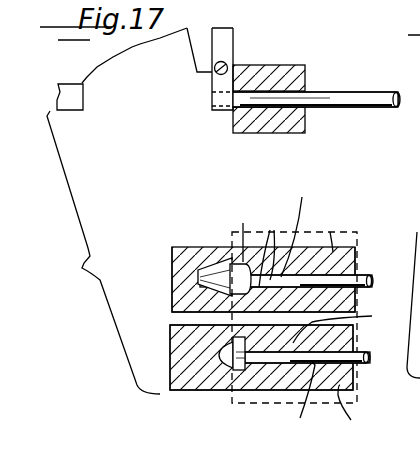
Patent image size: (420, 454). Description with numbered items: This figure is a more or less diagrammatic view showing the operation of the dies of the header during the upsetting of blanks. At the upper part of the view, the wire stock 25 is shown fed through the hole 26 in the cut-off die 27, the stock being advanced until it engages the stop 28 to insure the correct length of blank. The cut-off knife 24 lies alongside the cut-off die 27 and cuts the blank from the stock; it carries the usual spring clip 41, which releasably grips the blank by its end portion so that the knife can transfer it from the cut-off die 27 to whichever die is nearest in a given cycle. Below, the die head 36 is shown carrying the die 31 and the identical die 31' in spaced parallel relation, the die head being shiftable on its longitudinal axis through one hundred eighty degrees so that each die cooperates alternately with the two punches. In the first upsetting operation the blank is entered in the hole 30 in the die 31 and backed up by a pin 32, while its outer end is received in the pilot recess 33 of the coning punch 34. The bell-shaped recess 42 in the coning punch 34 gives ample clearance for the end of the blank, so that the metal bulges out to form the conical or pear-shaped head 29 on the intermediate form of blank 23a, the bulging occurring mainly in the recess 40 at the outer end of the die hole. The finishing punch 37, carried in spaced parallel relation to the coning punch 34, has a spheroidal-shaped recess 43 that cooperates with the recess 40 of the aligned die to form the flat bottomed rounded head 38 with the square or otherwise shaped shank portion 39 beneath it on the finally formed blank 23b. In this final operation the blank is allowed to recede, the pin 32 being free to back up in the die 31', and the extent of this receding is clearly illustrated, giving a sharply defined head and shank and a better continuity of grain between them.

The intermediate form of blank 23a is at (302, 227).
The finally formed blank 23b is at (306, 403).
The cut-off knife 24 is at (213, 111).
The wire stock 25 is at (338, 92).
The hole 26 is at (259, 90).
The cut-off die 27 is at (262, 130).
The stop 28 is at (83, 110).
The conical or pear-shaped head 29 is at (237, 234).
The hole 30 is at (345, 326).
The die 31 is at (323, 233).
The die 31' is at (357, 410).
The pin 32 is at (368, 275).
The pilot recess 33 is at (188, 280).
The coning punch 34 is at (188, 247).
The die head 36 is at (355, 232).
The finishing punch 37 is at (180, 388).
The flat bottomed rounded head 38 is at (226, 370).
The shank portion 39 is at (240, 372).
The recess 40 is at (271, 249).
The spring clip 41 is at (212, 90).
The bell-shaped recess 42 is at (224, 262).
The spheroidal-shaped recess 43 is at (220, 350).